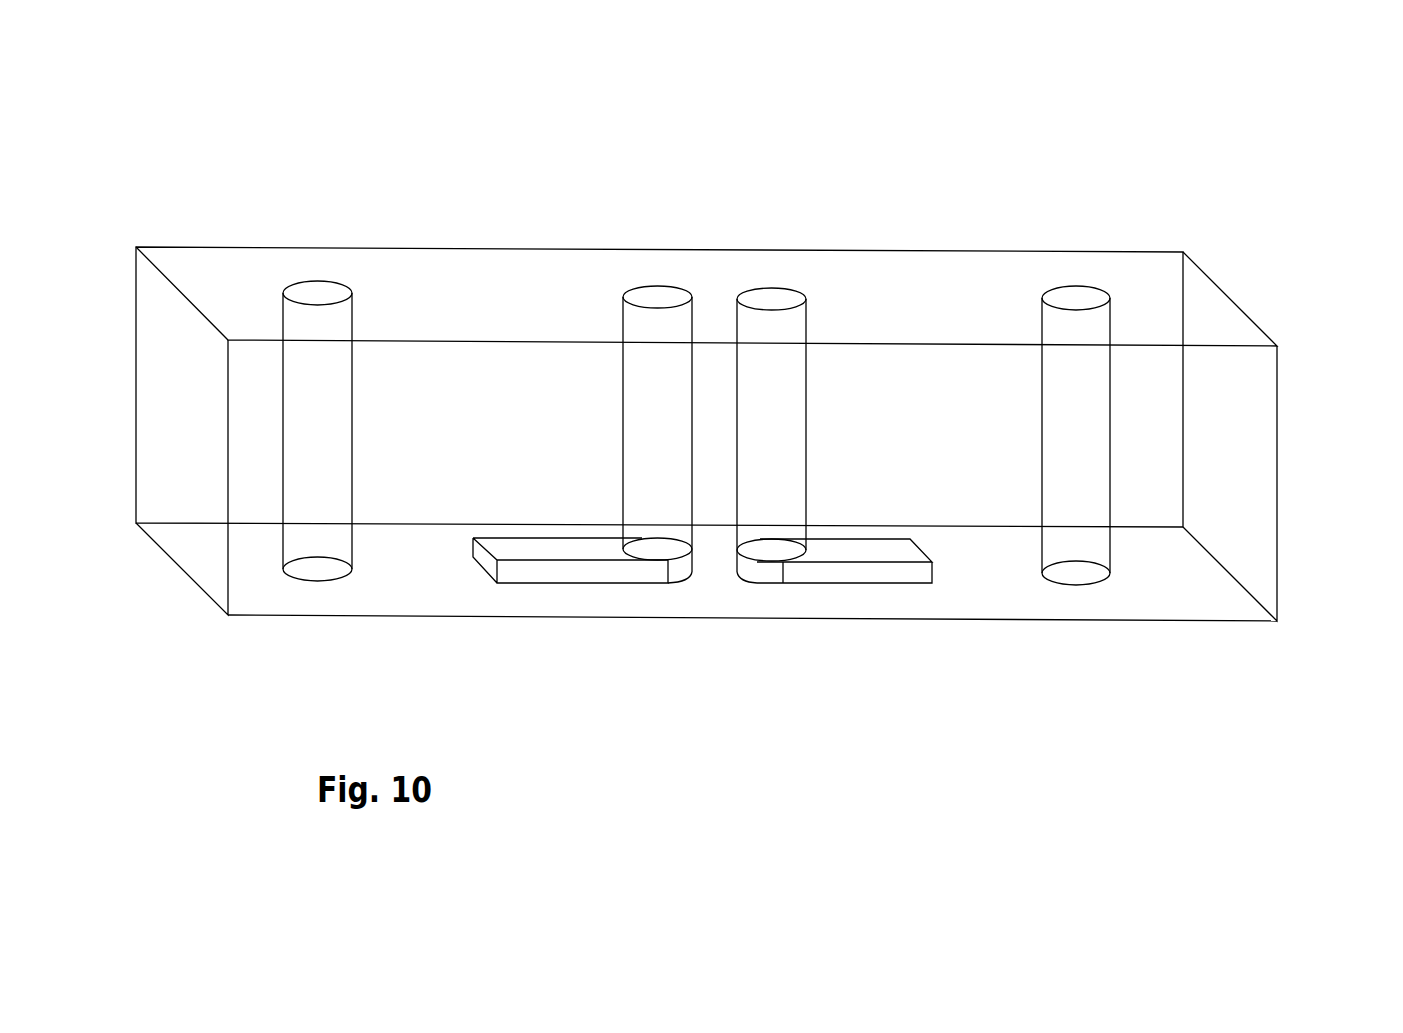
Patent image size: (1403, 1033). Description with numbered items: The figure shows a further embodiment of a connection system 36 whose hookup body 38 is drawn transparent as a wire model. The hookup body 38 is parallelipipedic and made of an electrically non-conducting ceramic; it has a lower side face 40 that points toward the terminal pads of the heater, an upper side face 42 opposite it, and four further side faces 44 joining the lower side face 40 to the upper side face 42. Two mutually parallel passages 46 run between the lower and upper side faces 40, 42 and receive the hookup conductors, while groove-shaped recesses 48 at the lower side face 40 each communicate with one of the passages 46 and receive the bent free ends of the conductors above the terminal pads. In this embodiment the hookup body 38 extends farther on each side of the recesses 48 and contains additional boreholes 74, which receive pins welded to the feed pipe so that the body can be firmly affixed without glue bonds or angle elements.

The connection system 36 is at (406, 200).
The hookup body 38 is at (913, 306).
The lower side face 40 is at (340, 630).
The upper side face 42 is at (983, 305).
The side faces 44 is at (176, 418).
The passages 46 is at (623, 383).
The recesses 48 is at (588, 577).
The boreholes 74 is at (313, 403).